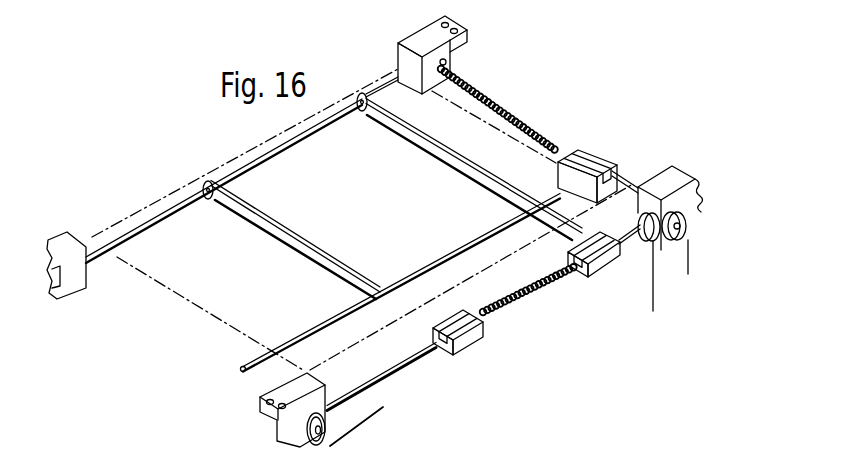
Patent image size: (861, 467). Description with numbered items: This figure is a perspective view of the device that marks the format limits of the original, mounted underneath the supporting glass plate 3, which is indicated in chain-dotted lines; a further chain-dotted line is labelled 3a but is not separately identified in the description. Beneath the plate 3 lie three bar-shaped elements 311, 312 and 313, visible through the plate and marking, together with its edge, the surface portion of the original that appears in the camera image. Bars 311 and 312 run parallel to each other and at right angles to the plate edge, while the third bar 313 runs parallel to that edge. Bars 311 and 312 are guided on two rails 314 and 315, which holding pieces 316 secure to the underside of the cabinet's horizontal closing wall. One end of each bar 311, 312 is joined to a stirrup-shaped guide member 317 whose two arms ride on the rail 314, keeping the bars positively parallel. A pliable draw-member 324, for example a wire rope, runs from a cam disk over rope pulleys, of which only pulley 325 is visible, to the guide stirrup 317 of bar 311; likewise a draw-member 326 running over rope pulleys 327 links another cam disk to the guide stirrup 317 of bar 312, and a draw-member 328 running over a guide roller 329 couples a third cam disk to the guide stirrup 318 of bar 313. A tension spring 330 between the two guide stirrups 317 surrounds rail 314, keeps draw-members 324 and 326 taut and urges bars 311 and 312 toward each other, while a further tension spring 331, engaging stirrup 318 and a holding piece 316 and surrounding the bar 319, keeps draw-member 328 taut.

The supporting glass plate 3 is at (180, 294).
The frame axis 3a is at (150, 203).
The bar-shaped element 311 is at (417, 137).
The bar-shaped element 312 is at (298, 244).
The third bar 313 is at (430, 262).
The rail 314 is at (366, 386).
The rail 315 is at (283, 152).
The holding piece 316 is at (410, 46).
The stirrup-shaped guide member 317 is at (592, 283).
The guide stirrup 318 is at (572, 150).
The bar 319 is at (623, 176).
The pliable draw-member 324 is at (688, 273).
The rope pulley 325 is at (648, 243).
The pliable draw-member 326 is at (372, 418).
The rope pulley 327 is at (321, 444).
The pliable draw-member 328 is at (653, 309).
The guide roller 329 is at (636, 224).
The tension spring 330 is at (527, 289).
The tension spring 331 is at (497, 104).